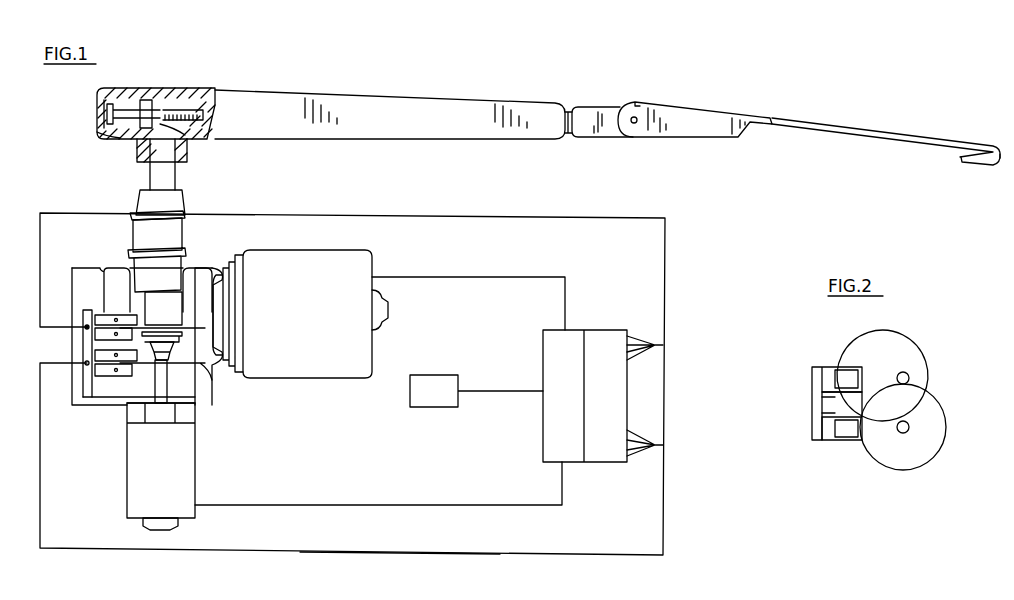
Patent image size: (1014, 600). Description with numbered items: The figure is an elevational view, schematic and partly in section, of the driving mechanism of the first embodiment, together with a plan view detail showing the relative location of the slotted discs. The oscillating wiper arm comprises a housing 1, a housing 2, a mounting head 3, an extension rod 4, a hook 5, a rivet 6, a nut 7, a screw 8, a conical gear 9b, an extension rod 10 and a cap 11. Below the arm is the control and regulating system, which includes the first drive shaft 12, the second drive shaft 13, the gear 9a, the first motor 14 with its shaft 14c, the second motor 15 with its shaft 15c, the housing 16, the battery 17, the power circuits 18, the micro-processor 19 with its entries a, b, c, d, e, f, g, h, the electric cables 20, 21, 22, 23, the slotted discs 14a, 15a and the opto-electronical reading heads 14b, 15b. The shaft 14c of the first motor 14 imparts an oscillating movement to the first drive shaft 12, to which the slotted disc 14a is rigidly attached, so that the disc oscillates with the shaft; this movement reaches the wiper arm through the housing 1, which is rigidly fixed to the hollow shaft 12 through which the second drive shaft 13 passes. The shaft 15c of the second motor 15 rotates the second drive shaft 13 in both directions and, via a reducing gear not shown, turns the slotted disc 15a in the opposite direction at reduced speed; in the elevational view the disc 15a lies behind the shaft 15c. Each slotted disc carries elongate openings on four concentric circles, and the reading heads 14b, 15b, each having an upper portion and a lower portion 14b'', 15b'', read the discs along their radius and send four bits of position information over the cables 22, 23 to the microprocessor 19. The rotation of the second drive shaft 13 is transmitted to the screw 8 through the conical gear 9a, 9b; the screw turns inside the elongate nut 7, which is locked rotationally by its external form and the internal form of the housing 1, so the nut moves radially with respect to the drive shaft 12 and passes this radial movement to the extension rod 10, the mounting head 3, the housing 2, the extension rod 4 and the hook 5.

In FIG. 1, the housing 1 is at (385, 100).
In FIG. 1, the housing 2 is at (682, 120).
In FIG. 1, the mounting head 3 is at (596, 113).
In FIG. 1, the extension rod 4 is at (873, 128).
In FIG. 1, the hook 5 is at (972, 165).
In FIG. 1, the rivet 6 is at (634, 117).
In FIG. 1, the nut 7 is at (196, 90).
In FIG. 1, the screw 8 is at (210, 112).
In FIG. 1, the gear 9a is at (170, 142).
In FIG. 1, the conical gear 9b is at (148, 98).
In FIG. 1, the extension rod 10 is at (568, 110).
In FIG. 1, the cap 11 is at (97, 92).
In FIG. 1, the first drive shaft 12 is at (148, 176).
In FIG. 1, the second drive shaft 13 is at (130, 133).
In FIG. 1, the first motor 14 is at (311, 262).
In FIG. 1, the slotted disc 14a is at (205, 328).
In FIG. 2, the slotted disc 14a is at (907, 460).
In FIG. 1, the opto-electronical reading head 14b is at (102, 311).
In FIG. 2, the opto-electronical reading head 14b is at (837, 451).
In FIG. 2, the lower portion 14b'' is at (864, 465).
In FIG. 1, the shaft 14c is at (188, 313).
In FIG. 1, the second motor 15 is at (128, 478).
In FIG. 1, the slotted disc 15a is at (203, 370).
In FIG. 2, the slotted disc 15a is at (928, 360).
In FIG. 1, the opto-electronical reading head 15b is at (135, 412).
In FIG. 2, the opto-electronical reading head 15b is at (837, 372).
In FIG. 2, the lower portion 15b'' is at (881, 346).
In FIG. 1, the shaft 15c is at (170, 385).
In FIG. 1, the housing 16 is at (168, 206).
In FIG. 1, the battery 17 is at (447, 400).
In FIG. 1, the power circuits 18 is at (573, 338).
In FIG. 1, the micro-processor 19 is at (612, 397).
In FIG. 1, the electric cable 20 is at (437, 277).
In FIG. 1, the electric cable 21 is at (345, 505).
In FIG. 1, the electric cable 22 is at (404, 218).
In FIG. 1, the electric cable 23 is at (386, 550).
In FIG. 1, the entry a is at (633, 338).
In FIG. 1, the entry b is at (626, 343).
In FIG. 1, the entry c is at (627, 350).
In FIG. 1, the entry d is at (631, 360).
In FIG. 1, the entry e is at (631, 436).
In FIG. 1, the entry f is at (628, 440).
In FIG. 1, the entry g is at (628, 452).
In FIG. 1, the entry h is at (633, 453).